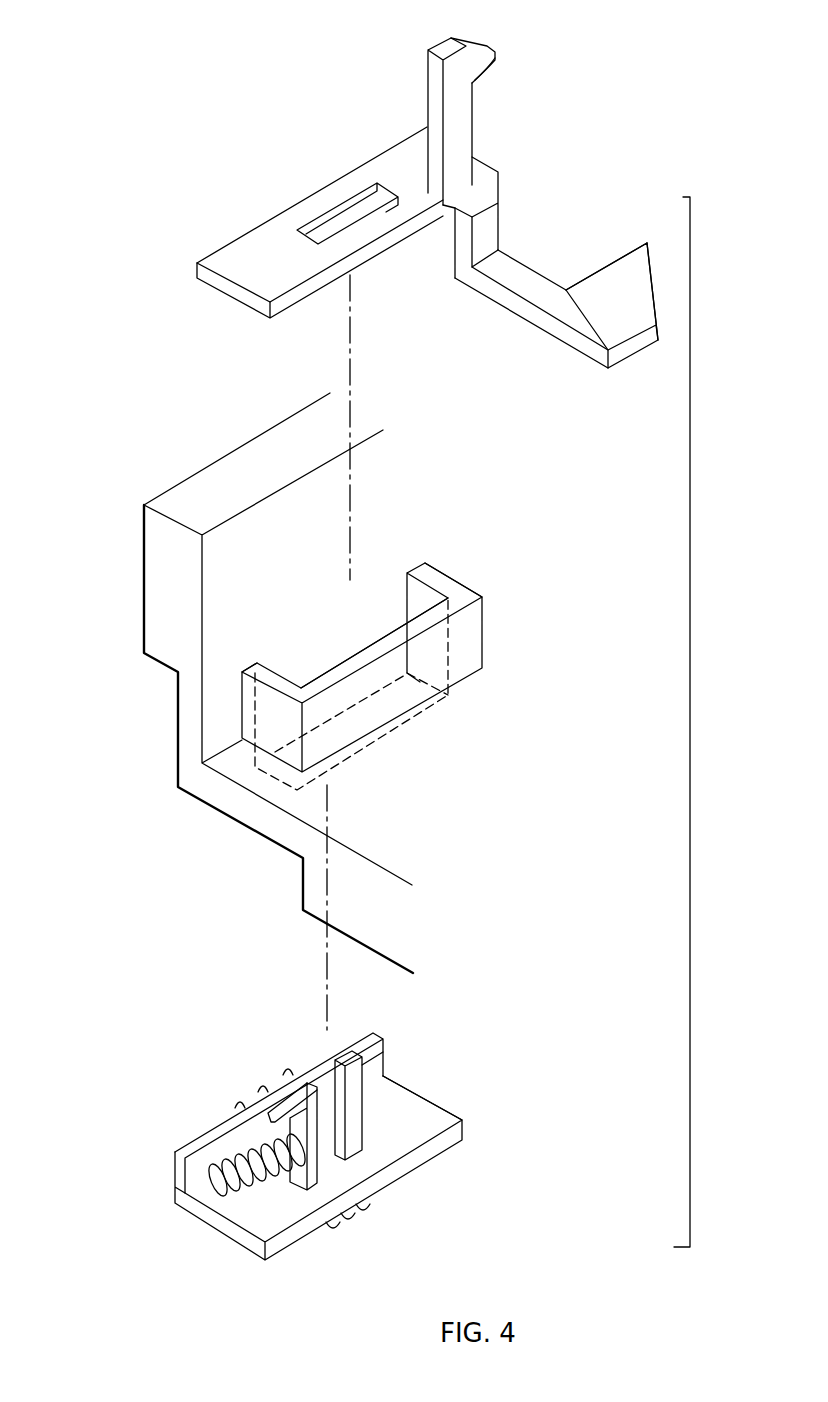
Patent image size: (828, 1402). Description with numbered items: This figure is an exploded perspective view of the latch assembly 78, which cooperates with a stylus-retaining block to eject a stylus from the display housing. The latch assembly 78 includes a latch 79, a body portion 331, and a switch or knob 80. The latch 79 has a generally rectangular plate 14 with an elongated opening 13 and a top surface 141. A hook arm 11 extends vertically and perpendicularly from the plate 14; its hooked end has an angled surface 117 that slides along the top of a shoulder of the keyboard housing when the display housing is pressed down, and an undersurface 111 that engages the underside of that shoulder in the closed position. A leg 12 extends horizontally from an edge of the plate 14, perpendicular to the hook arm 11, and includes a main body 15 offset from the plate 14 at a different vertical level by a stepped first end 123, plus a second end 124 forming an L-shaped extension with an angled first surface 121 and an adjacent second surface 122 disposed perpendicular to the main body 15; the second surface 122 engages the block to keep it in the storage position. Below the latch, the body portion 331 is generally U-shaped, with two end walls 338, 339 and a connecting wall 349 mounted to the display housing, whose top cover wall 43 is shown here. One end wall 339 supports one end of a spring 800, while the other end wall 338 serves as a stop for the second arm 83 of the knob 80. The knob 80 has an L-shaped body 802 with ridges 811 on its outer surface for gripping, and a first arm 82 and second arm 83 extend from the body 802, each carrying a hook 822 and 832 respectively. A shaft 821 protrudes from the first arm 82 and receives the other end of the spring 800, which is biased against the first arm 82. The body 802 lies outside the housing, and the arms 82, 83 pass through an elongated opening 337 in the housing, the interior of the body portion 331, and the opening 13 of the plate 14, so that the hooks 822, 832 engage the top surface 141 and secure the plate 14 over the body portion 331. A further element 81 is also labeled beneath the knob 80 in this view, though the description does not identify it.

The latch 79 is at (513, 152).
The hook arm 11 is at (427, 92).
The angled surface 117 is at (470, 42).
The undersurface 111 is at (482, 90).
The plate 14 is at (237, 253).
The top surface 141 is at (292, 277).
The elongated opening 13 is at (338, 203).
The leg 12 is at (598, 303).
The stepped first end 123 is at (448, 206).
The main body 15 is at (505, 278).
The angled first surface 121 is at (665, 285).
The second surface 122 is at (606, 266).
The second end 124 is at (622, 325).
The top cover wall 43 is at (243, 813).
The elongated opening 337 is at (410, 722).
The body portion 331 is at (432, 569).
The end wall 338 is at (460, 583).
The end wall 339 is at (272, 678).
The connecting wall 349 is at (352, 650).
The latch assembly 78 is at (693, 672).
The knob 80 is at (158, 1189).
The spring 800 is at (237, 1190).
The ridges 811 is at (240, 1108).
The second arm 83 is at (355, 1128).
The hook 832 is at (358, 1073).
The L-shaped body 802 is at (403, 1107).
The first arm 82 is at (310, 1167).
The hook 822 is at (288, 1102).
The shaft 821 is at (283, 1147).
The spring 81 is at (333, 1222).